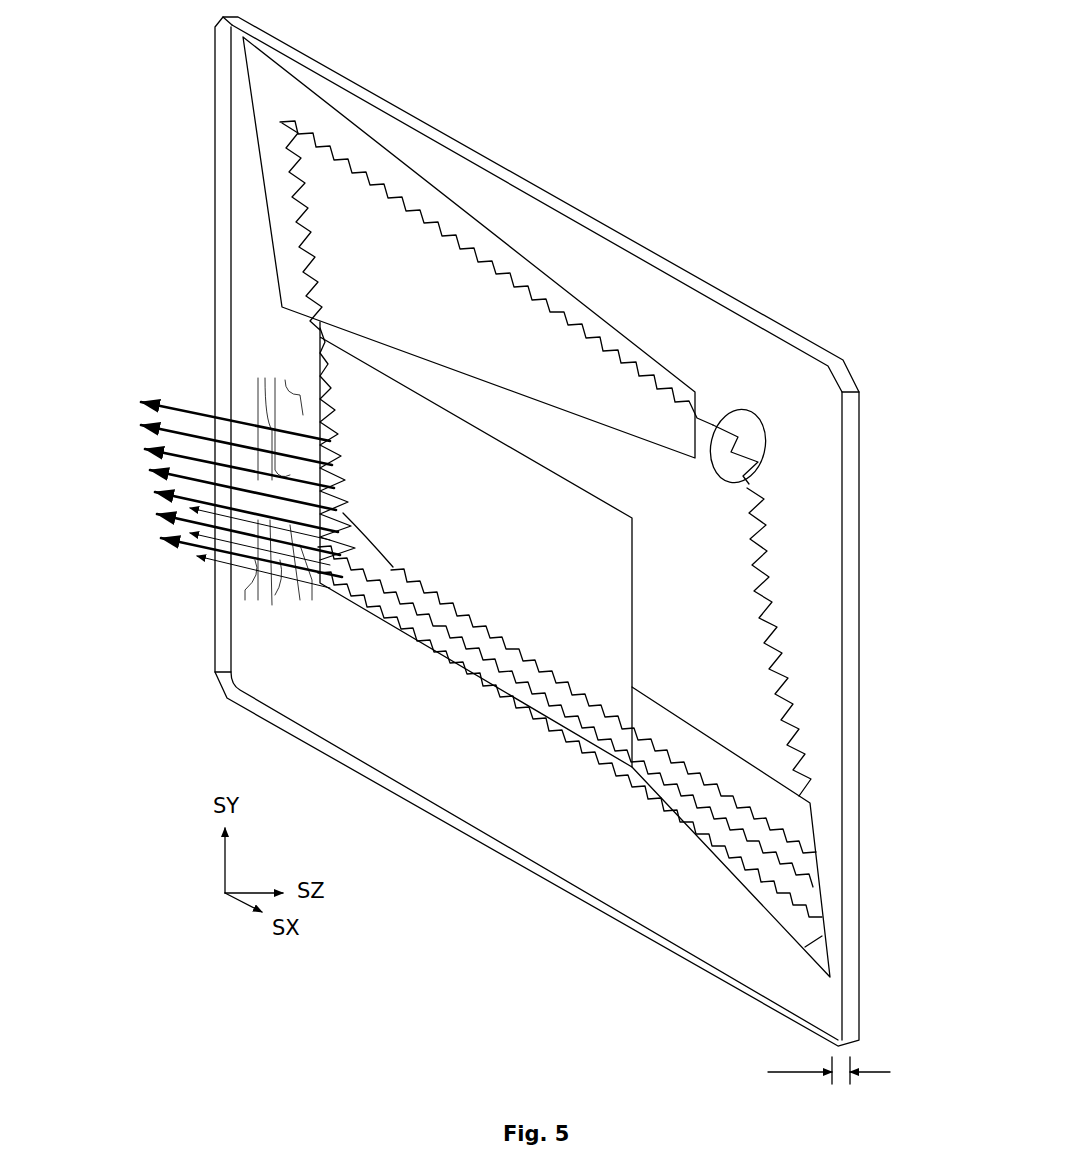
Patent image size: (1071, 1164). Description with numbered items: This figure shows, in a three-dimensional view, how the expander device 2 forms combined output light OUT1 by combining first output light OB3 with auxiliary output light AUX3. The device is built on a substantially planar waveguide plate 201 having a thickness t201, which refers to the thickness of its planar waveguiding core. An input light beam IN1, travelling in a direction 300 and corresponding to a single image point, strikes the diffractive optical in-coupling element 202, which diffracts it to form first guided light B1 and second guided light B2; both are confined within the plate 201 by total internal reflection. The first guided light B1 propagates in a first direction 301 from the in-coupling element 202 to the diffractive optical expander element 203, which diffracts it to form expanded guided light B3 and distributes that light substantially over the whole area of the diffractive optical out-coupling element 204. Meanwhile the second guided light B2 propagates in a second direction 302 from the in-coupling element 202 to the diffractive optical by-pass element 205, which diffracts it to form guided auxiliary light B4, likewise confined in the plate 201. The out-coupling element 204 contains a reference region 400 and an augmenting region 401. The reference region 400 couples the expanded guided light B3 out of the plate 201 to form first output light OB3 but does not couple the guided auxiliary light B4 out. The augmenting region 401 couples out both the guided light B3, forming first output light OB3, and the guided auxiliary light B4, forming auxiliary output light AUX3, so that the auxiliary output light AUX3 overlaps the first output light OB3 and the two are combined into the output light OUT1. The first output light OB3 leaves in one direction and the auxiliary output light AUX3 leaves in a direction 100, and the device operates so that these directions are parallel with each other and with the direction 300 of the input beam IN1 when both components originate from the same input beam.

The expander device 2 is at (587, 168).
The direction of auxiliary output beam component 100 is at (190, 668).
The waveguide plate 201 is at (430, 822).
The diffractive optical in-coupling element 202 is at (738, 410).
The diffractive optical expander element 203 is at (651, 364).
The diffractive optical out-coupling element 204 is at (641, 562).
The diffractive optical by-pass element 205 is at (750, 895).
The direction of input beam 300 is at (950, 527).
The first direction 301 is at (582, 362).
The second direction 302 is at (745, 622).
The reference region 400 is at (403, 400).
The augmenting region 401 is at (570, 715).
The first guided light B1 is at (487, 260).
The second guided light B2 is at (770, 580).
The expanded guided light B3 is at (312, 252).
The guided auxiliary light B4 is at (400, 540).
The input light beam IN1 is at (750, 448).
The combined output light OUT1 is at (141, 377).
The first output light OB3 is at (275, 496).
The auxiliary output light AUX3 is at (318, 570).
The thickness of waveguide plate t201 is at (829, 1061).